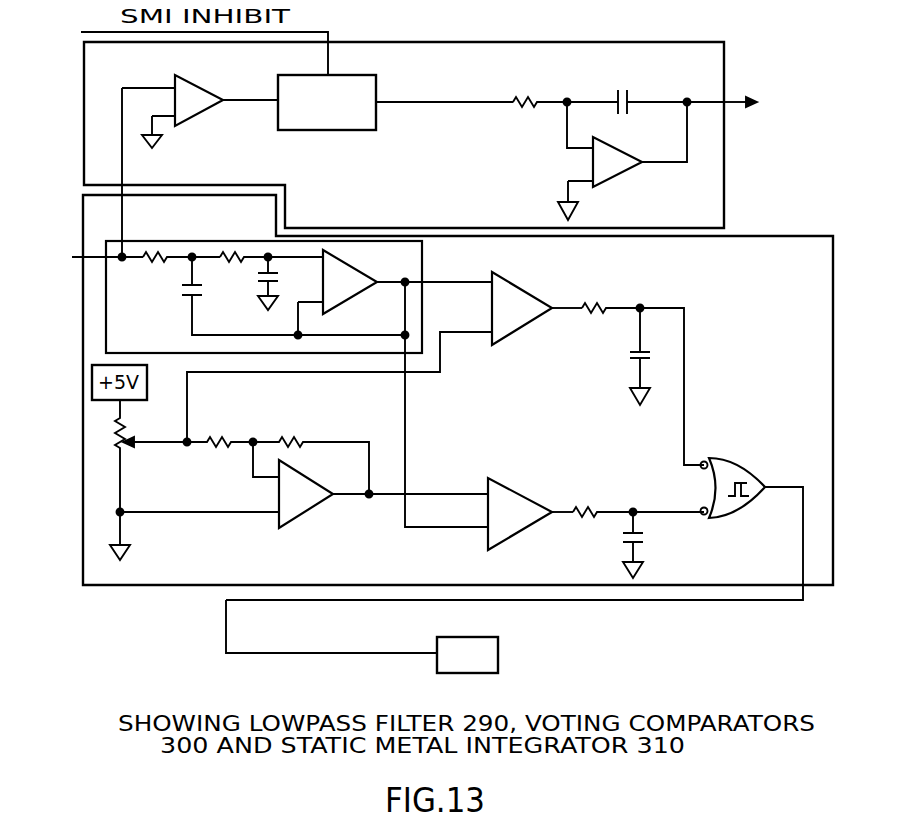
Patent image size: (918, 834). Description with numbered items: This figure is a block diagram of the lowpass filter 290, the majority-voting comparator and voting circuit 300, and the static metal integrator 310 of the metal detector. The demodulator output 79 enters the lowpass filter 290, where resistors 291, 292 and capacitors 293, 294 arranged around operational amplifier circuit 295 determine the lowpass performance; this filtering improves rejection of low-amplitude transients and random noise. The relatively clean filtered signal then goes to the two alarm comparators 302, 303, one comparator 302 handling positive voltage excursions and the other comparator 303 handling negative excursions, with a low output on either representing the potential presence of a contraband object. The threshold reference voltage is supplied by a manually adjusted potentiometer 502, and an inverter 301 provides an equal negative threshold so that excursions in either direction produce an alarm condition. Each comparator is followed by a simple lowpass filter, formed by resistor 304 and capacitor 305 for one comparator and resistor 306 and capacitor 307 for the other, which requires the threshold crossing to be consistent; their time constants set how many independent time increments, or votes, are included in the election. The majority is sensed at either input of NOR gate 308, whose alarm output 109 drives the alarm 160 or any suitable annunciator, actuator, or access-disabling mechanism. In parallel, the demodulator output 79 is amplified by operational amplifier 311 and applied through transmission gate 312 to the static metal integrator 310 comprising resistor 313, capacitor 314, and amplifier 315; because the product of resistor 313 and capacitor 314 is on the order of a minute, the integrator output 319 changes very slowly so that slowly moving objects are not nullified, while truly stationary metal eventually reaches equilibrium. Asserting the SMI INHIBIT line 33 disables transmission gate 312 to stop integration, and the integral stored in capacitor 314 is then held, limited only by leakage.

The SMI INHIBIT line 33 is at (186, 47).
The demodulator output 79 is at (91, 256).
The alarm output 109 is at (331, 627).
The alarm 160 is at (510, 655).
The lowpass filter 290 is at (131, 319).
The resistor 291 is at (180, 238).
The resistor 292 is at (266, 240).
The capacitor 293 is at (271, 298).
The capacitor 294 is at (245, 283).
The operational amplifier circuit 295 is at (395, 388).
The comparator and voting circuit 300 is at (793, 218).
The inverter 301 is at (304, 493).
The alarm comparator 302 is at (384, 352).
The alarm comparator 303 is at (519, 510).
The resistor 304 is at (642, 369).
The capacitor 305 is at (615, 356).
The resistor 306 is at (636, 502).
The capacitor 307 is at (653, 545).
The NOR gate 308 is at (514, 518).
The static metal integrator 310 is at (516, 43).
The operational amplifier 311 is at (200, 159).
The transmission gate 312 is at (327, 91).
The resistor 313 is at (497, 87).
The capacitor 314 is at (665, 90).
The amplifier 315 is at (623, 161).
The integrator output 319 is at (762, 102).
The potentiometer 502 is at (150, 480).